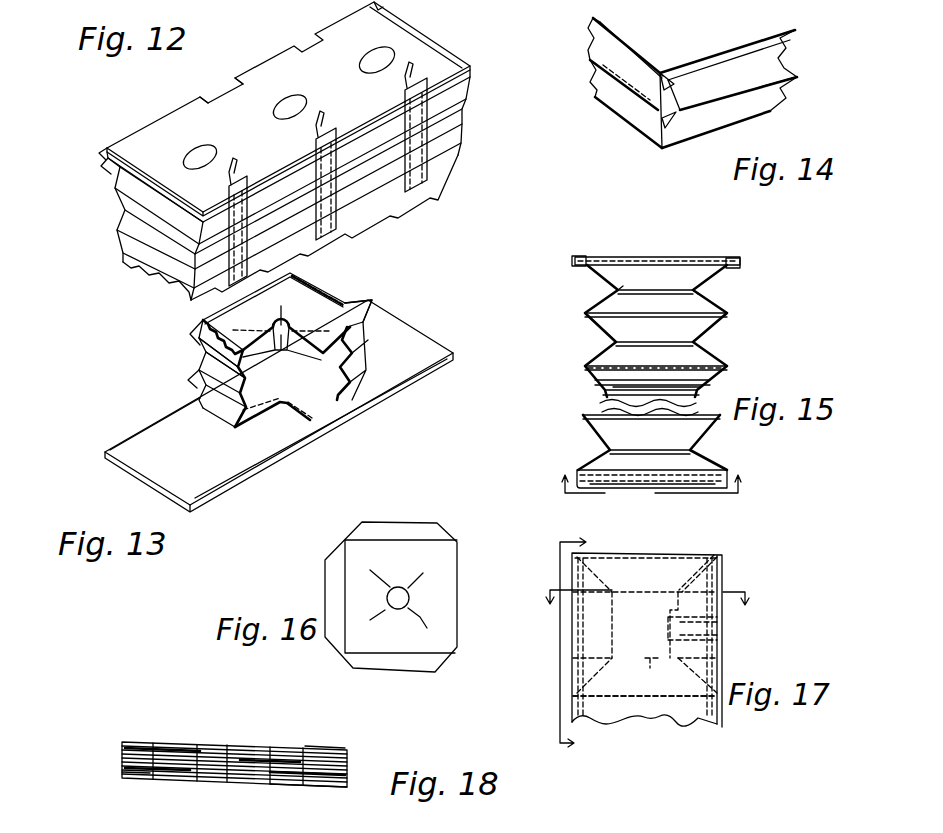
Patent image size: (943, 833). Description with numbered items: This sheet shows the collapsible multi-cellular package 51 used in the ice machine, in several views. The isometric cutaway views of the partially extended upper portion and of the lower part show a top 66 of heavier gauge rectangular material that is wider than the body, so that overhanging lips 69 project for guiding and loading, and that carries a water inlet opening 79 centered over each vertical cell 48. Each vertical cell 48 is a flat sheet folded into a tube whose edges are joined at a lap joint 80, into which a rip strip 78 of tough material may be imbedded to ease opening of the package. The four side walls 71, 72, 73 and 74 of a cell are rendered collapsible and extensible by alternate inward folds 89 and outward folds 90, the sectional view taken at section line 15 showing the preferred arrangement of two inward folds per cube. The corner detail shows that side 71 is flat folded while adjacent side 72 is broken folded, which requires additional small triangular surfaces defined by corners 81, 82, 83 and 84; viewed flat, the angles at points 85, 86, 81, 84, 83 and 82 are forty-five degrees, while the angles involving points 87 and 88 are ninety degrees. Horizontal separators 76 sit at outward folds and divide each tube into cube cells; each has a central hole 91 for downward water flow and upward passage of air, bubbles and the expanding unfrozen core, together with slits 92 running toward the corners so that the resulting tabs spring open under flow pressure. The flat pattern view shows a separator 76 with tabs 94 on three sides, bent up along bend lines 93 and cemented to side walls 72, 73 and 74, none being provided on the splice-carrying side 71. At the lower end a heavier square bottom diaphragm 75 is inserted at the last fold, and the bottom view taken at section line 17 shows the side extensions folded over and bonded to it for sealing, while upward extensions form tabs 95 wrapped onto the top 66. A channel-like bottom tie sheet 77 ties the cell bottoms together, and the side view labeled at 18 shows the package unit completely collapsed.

In FIG. 17, the section line 15 is at (651, 612).
In FIG. 15, the section line 17 is at (648, 476).
In FIG. 17, the section line 18- 18 is at (586, 642).
In FIG. 13, the vertical cell 48 is at (200, 358).
In FIG. 18, the vertical cell 48 is at (197, 745).
In FIG. 12, the package 51 is at (153, 122).
In FIG. 18, the package 51 is at (122, 752).
In FIG. 12, the top 66 is at (395, 44).
In FIG. 15, the top 66 is at (688, 260).
In FIG. 18, the top 66 is at (312, 748).
In FIG. 12, the overhanging lip 69 is at (106, 152).
In FIG. 15, the overhanging lip 69 is at (572, 262).
In FIG. 13, the side wall 71 is at (368, 337).
In FIG. 14, the side wall 71 is at (630, 117).
In FIG. 15, the side wall 71 is at (712, 352).
In FIG. 17, the side wall 71 is at (670, 610).
In FIG. 13, the side wall 72 is at (326, 294).
In FIG. 14, the side wall 72 is at (710, 130).
In FIG. 15, the side wall 72 is at (656, 340).
In FIG. 17, the side wall 72 is at (645, 677).
In FIG. 13, the side wall 73 is at (205, 318).
In FIG. 15, the side wall 73 is at (602, 332).
In FIG. 17, the side wall 73 is at (613, 646).
In FIG. 13, the side wall 74 is at (200, 337).
In FIG. 15, the side wall 74 is at (667, 476).
In FIG. 17, the side wall 74 is at (640, 592).
In FIG. 13, the bottom diaphragm 75 is at (307, 427).
In FIG. 15, the bottom diaphragm 75 is at (637, 468).
In FIG. 13, the separator 76 is at (302, 358).
In FIG. 15, the separator 76 is at (640, 367).
In FIG. 15, the bottom tie sheet 77 is at (592, 455).
In FIG. 17, the bottom tie sheet 77 is at (627, 720).
In FIG. 18, the bottom tie sheet 77 is at (278, 782).
In FIG. 12, the rip strip 78 is at (236, 163).
In FIG. 17, the rip strip 78 is at (668, 630).
In FIG. 12, the water inlet opening 79 is at (210, 150).
In FIG. 12, the lap joint 80 is at (386, 188).
In FIG. 18, the lap joint 80 is at (150, 770).
In FIG. 14, the corner 81 is at (693, 76).
In FIG. 14, the corner 82 is at (683, 88).
In FIG. 14, the corner 83 is at (664, 108).
In FIG. 14, the corner 84 is at (660, 72).
In FIG. 14, the corner 85 is at (792, 36).
In FIG. 14, the corner 86 is at (792, 81).
In FIG. 14, the corner 87 is at (593, 18).
In FIG. 14, the corner 88 is at (590, 60).
In FIG. 15, the inward fold 89 is at (707, 292).
In FIG. 15, the outward fold 90 is at (717, 322).
In FIG. 13, the hole 91 is at (287, 328).
In FIG. 16, the hole 91 is at (398, 587).
In FIG. 13, the slit 92 is at (278, 313).
In FIG. 16, the slit 92 is at (378, 620).
In FIG. 16, the bend line 93 is at (343, 557).
In FIG. 13, the tab 94 is at (246, 357).
In FIG. 15, the tab 94 is at (610, 375).
In FIG. 16, the tab 94 is at (382, 673).
In FIG. 12, the tab 95 is at (188, 181).